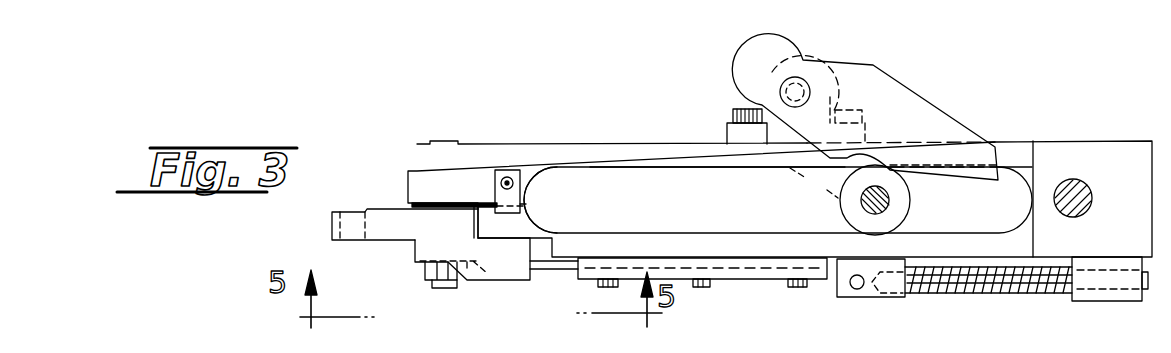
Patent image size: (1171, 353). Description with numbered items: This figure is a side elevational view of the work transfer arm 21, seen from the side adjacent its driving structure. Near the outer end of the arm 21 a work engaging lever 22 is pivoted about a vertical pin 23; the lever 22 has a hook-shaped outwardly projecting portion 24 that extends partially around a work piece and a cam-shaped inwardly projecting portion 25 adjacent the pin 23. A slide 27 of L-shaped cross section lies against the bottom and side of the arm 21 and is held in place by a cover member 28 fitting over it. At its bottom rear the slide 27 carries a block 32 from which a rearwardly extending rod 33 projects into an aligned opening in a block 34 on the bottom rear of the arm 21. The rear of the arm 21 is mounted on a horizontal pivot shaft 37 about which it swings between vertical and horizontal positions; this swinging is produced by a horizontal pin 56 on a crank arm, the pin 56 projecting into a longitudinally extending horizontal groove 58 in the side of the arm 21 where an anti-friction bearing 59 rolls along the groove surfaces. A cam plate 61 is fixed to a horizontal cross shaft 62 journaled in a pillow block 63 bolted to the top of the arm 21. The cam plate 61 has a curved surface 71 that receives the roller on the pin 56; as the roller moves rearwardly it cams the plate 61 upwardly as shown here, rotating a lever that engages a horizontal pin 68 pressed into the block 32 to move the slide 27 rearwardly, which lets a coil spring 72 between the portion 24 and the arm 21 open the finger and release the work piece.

The arm 21 is at (642, 144).
The work engaging lever 22 is at (414, 263).
The vertical pin 23 is at (452, 289).
The outwardly projecting portion 24 is at (377, 241).
The inwardly projecting portion 25 is at (506, 281).
The slide 27 is at (558, 270).
The cover member 28 is at (751, 280).
The block 32 is at (878, 298).
The rod 33 is at (1043, 293).
The block 34 is at (1118, 303).
The horizontal pivot shaft 37 is at (1082, 178).
The horizontal pin 56 is at (889, 205).
The horizontal groove 58 is at (622, 172).
The anti-friction bearing 59 is at (840, 208).
The cam plate 61 is at (935, 108).
The horizontal cross shaft 62 is at (793, 84).
The pillow block 63 is at (730, 120).
The horizontal pin 68 is at (850, 288).
The curved surface 71 is at (845, 163).
The coil spring 72 is at (388, 208).